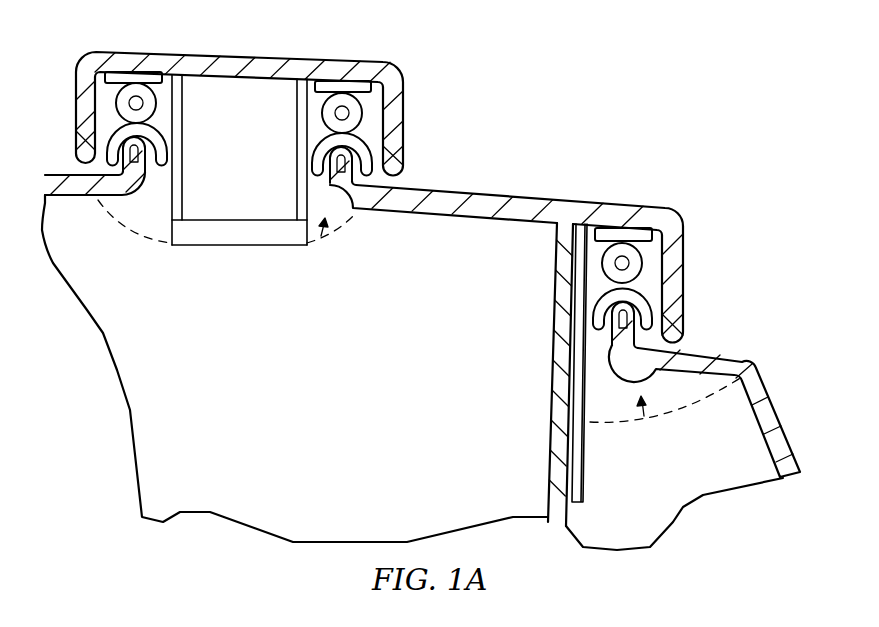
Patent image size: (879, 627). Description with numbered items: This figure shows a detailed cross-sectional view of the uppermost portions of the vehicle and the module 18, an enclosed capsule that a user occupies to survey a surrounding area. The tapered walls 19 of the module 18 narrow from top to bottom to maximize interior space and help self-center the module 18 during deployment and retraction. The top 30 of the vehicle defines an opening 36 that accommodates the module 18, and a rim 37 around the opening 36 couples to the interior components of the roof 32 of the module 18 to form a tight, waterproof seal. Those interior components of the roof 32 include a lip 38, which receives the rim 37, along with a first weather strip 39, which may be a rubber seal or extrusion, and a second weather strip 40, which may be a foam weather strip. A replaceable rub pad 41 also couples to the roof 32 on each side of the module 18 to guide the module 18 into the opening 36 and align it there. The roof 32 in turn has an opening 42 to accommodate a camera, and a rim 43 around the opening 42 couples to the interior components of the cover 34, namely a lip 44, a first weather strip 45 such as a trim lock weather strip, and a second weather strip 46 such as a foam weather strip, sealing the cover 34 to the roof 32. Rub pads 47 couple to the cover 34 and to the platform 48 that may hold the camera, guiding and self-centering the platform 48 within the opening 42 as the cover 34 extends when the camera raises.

The module 18 is at (324, 389).
The walls 19 is at (549, 390).
The top 30 is at (752, 362).
The roof 32 is at (527, 199).
The cover 34 is at (231, 52).
The opening 36 is at (645, 418).
The rim 37 is at (640, 305).
The lip 38 is at (577, 300).
The first weather strip 39 is at (650, 265).
The second weather strip 40 is at (622, 233).
The rub pad 41 is at (583, 470).
The opening 42 is at (326, 240).
The rim 43 is at (108, 155).
The lip 44 is at (118, 127).
The first weather strip 45 is at (112, 97).
The second weather strip 46 is at (147, 72).
The rub pads 47 is at (182, 140).
The platform 48 is at (235, 220).